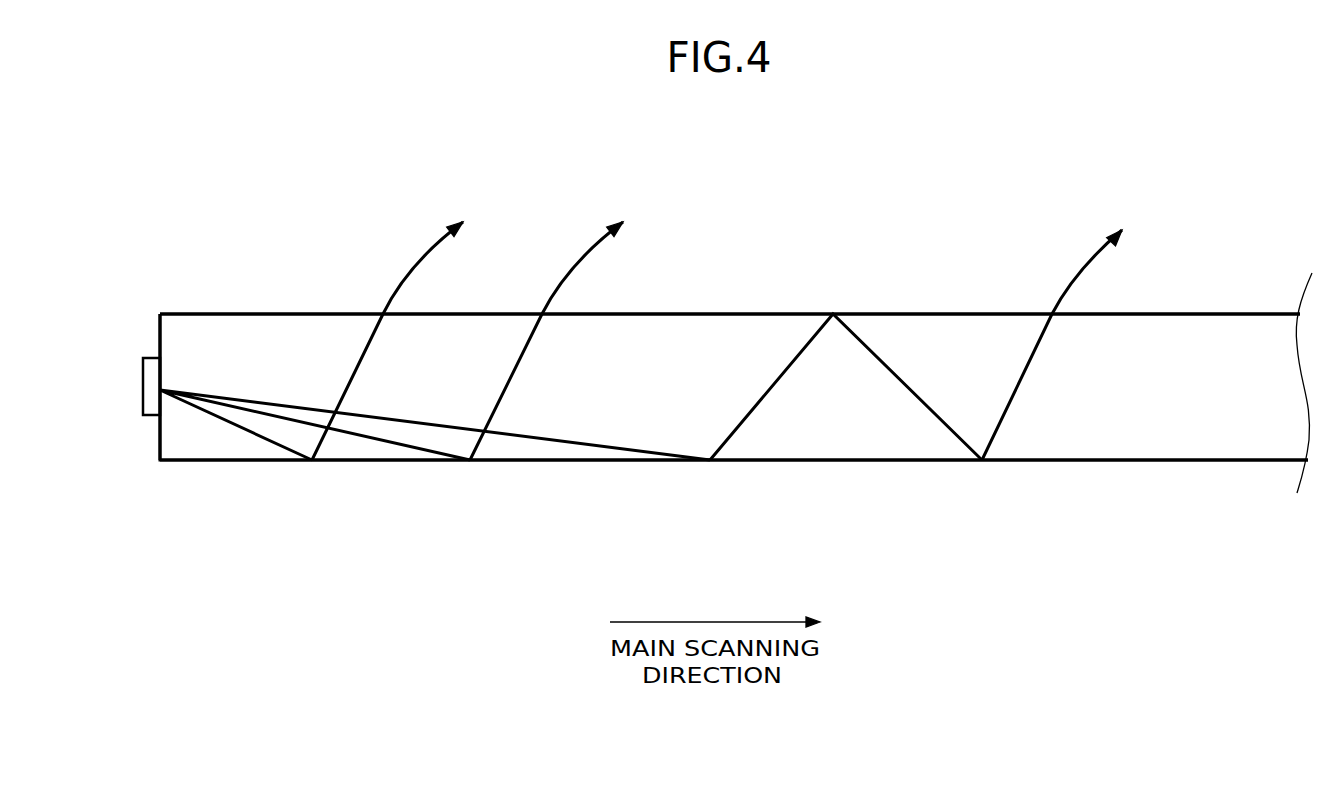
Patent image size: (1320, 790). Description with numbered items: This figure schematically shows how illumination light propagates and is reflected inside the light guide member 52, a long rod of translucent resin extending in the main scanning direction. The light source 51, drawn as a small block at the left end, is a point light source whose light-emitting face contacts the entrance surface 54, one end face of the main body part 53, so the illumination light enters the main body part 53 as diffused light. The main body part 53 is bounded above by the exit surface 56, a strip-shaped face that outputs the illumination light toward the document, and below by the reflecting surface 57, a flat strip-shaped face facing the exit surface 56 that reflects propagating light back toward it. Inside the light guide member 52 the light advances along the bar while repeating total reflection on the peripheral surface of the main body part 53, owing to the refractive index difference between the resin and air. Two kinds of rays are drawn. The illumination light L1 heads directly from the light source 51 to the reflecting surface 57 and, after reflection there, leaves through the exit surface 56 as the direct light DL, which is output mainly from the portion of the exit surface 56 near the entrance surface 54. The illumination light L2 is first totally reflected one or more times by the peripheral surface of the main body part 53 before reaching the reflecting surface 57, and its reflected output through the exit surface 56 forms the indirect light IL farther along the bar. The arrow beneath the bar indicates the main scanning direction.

The light source 51 is at (143, 388).
The light guide member 52 is at (352, 243).
The main body part 53 is at (1166, 425).
The entrance surface 54 is at (158, 440).
The exit surface 56 is at (258, 313).
The reflecting surface 57 is at (389, 462).
The illumination light L1 is at (250, 432).
The illumination light L2 is at (908, 390).
The direct light DL is at (477, 322).
The indirect light IL is at (1060, 328).